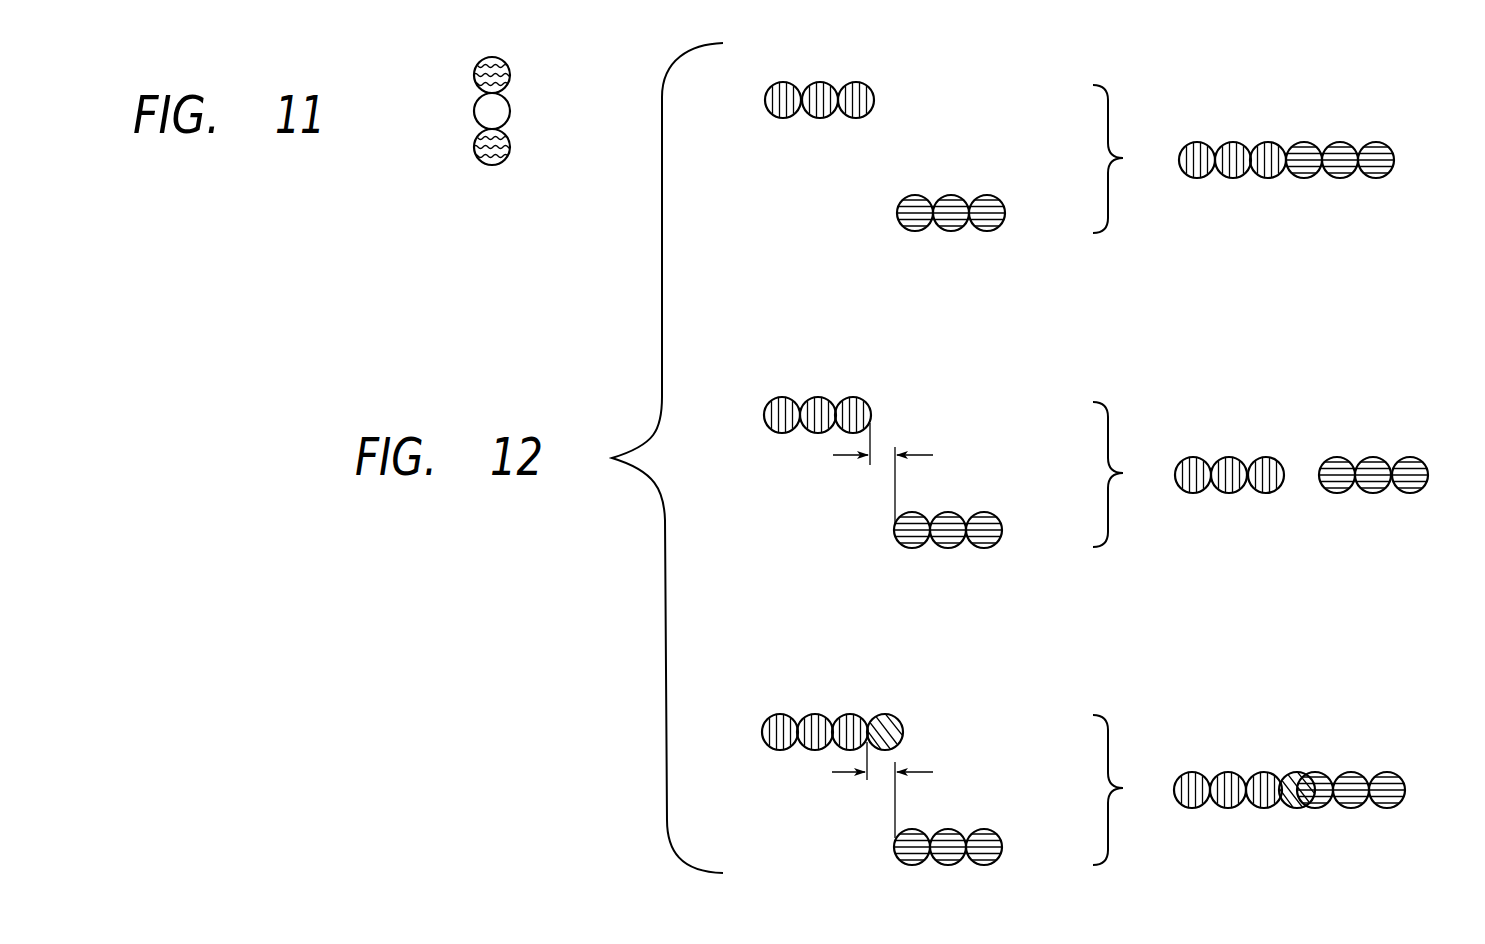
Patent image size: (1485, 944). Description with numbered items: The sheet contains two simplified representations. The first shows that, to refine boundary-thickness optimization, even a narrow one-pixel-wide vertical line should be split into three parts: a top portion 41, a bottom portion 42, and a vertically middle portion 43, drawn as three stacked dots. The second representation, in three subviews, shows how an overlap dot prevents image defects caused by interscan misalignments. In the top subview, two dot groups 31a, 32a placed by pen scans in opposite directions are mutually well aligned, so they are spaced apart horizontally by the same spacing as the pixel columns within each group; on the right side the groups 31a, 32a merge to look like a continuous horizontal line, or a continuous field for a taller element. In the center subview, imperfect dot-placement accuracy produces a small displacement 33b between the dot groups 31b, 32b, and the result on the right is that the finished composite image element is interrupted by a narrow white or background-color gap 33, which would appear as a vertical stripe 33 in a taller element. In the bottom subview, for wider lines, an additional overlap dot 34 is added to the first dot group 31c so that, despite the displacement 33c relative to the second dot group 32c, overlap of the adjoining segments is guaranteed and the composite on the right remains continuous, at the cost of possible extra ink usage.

In FIG. 11, the top portion 41 is at (475, 80).
In FIG. 11, the bottom portion 42 is at (475, 137).
In FIG. 11, the vertically middle portion 43 is at (474, 115).
In FIG. 12, the first dot group 31a is at (810, 73).
In FIG. 12, the second dot group 32a is at (942, 185).
In FIG. 12, the first dot group 31b is at (808, 390).
In FIG. 12, the second dot group 32b is at (975, 503).
In FIG. 12, the displacement 33b is at (903, 473).
In FIG. 12, the gap 33 is at (1302, 480).
In FIG. 12, the first dot group 31c is at (782, 705).
In FIG. 12, the second dot group 32c is at (975, 820).
In FIG. 12, the displacement 33c is at (902, 790).
In FIG. 12, the overlap dot 34 is at (883, 718).